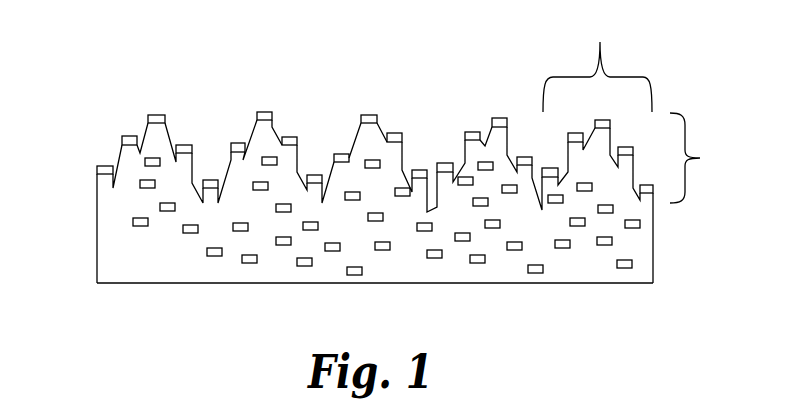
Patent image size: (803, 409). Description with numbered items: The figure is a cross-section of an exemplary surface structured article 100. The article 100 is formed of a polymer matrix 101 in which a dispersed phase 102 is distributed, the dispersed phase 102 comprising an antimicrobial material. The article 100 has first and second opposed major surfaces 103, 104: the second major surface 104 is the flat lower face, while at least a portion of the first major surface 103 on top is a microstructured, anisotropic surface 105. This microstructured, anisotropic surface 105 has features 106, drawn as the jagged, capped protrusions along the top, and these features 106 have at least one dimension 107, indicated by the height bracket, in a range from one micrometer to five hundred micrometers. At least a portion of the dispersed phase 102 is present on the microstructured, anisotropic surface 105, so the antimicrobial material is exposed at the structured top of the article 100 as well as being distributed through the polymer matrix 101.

The surface structured article 100 is at (737, 37).
The polymer matrix 101 is at (146, 258).
The dispersed phase 102 is at (131, 193).
The first major surface 103 is at (376, 147).
The second major surface 104 is at (375, 310).
The microstructured, anisotropic surface 105 is at (108, 133).
The features 106 is at (597, 62).
The dimension 107 is at (710, 158).